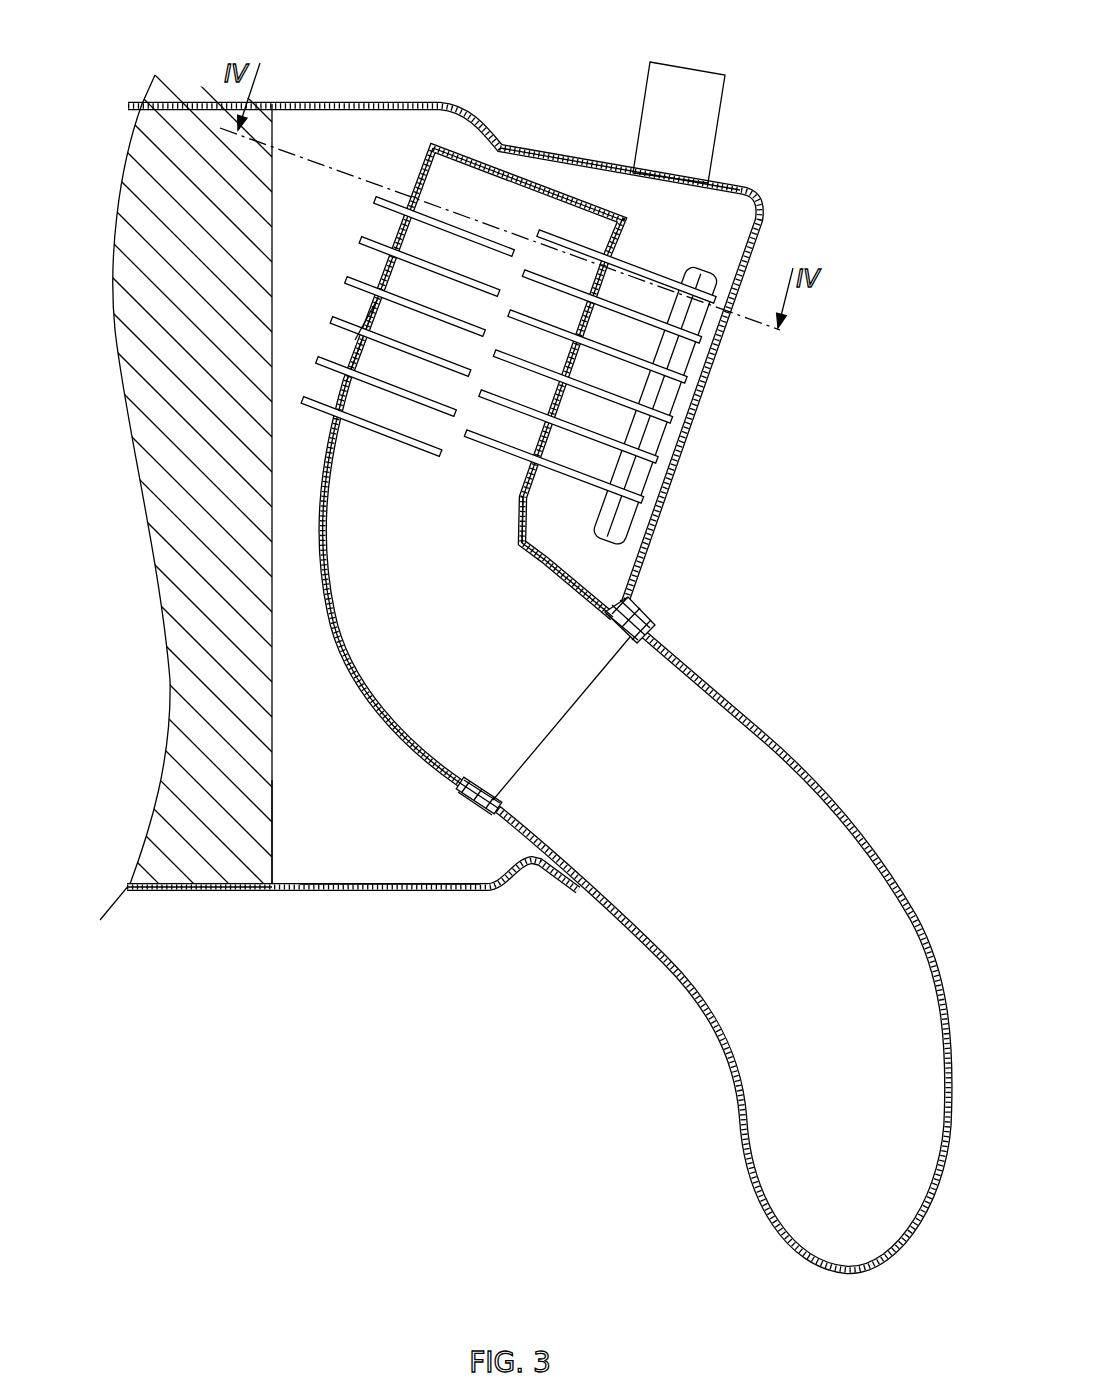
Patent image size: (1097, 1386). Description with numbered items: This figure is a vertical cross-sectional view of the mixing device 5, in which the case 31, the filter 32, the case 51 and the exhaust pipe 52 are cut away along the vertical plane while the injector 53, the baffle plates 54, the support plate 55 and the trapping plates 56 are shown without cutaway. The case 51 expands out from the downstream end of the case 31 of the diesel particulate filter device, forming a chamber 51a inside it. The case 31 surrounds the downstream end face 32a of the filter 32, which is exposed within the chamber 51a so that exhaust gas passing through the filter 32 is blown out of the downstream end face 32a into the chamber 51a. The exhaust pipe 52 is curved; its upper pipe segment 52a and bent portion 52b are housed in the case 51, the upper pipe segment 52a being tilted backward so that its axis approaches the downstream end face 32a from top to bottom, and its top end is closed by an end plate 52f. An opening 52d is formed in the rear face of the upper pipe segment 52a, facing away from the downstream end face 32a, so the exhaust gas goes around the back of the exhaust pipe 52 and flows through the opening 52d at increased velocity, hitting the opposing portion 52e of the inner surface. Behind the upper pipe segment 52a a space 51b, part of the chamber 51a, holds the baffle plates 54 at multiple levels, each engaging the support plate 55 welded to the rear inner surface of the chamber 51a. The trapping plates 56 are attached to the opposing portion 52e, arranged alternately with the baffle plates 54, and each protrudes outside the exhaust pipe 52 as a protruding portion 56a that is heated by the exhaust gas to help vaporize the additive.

The mixing device 5 is at (778, 170).
The case 31 is at (178, 891).
The filter 32 is at (198, 678).
The downstream end face 32a is at (273, 803).
The case 51 is at (410, 891).
The chamber 51a is at (360, 843).
The space 51b is at (563, 493).
The exhaust pipe 52 is at (755, 724).
The upper pipe segment 52a is at (420, 172).
The bent portion 52b is at (343, 640).
The opening 52d is at (560, 402).
The opposing portion 52e is at (355, 343).
The end plate 52f is at (537, 177).
The injector 53 is at (683, 78).
The baffle plates 54 is at (565, 295).
The support plate 55 is at (618, 540).
The trapping plates 56 is at (468, 305).
The protruding portion 56a is at (355, 340).